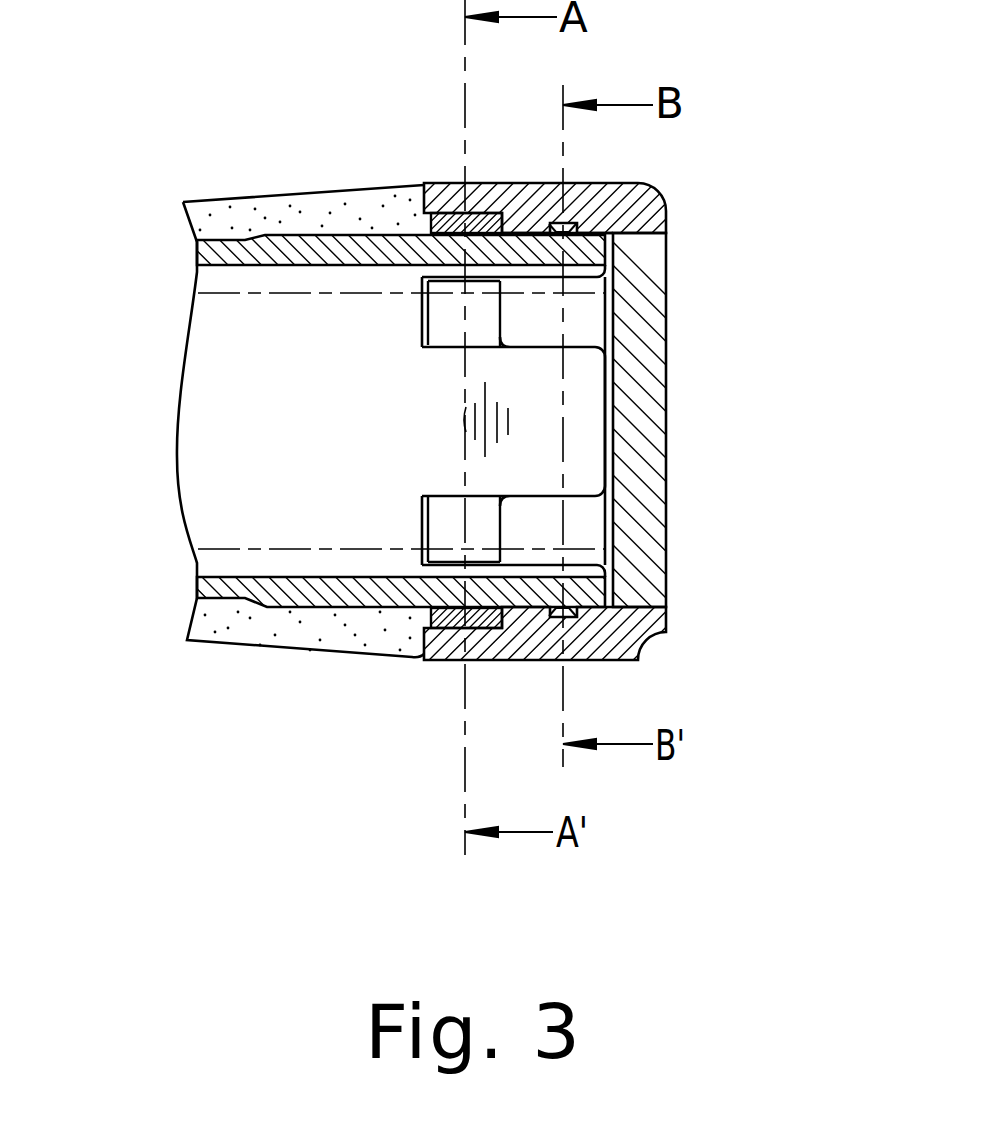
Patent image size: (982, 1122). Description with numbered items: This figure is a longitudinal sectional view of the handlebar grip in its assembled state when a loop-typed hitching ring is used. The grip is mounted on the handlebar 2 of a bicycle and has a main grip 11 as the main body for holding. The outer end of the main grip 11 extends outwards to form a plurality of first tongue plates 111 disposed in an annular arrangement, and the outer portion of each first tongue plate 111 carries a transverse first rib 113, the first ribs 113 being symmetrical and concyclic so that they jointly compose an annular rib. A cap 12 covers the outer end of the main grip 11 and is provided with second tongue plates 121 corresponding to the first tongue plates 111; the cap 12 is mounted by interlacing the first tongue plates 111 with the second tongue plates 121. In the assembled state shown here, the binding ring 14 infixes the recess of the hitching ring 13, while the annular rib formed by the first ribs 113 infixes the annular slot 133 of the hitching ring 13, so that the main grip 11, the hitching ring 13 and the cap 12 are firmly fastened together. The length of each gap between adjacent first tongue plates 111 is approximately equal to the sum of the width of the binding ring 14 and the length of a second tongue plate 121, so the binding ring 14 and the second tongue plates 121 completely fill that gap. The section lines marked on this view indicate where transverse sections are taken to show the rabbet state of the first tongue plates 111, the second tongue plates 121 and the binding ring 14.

The handlebar 2 is at (213, 565).
The main grip 11 is at (277, 637).
The cap 12 is at (638, 445).
The hitching ring 13 is at (640, 214).
The binding ring 14 is at (445, 528).
The first tongue plates 111 is at (583, 412).
The first rib 113 is at (580, 213).
The second tongue plates 121 is at (583, 525).
The annular slot 133 is at (563, 226).